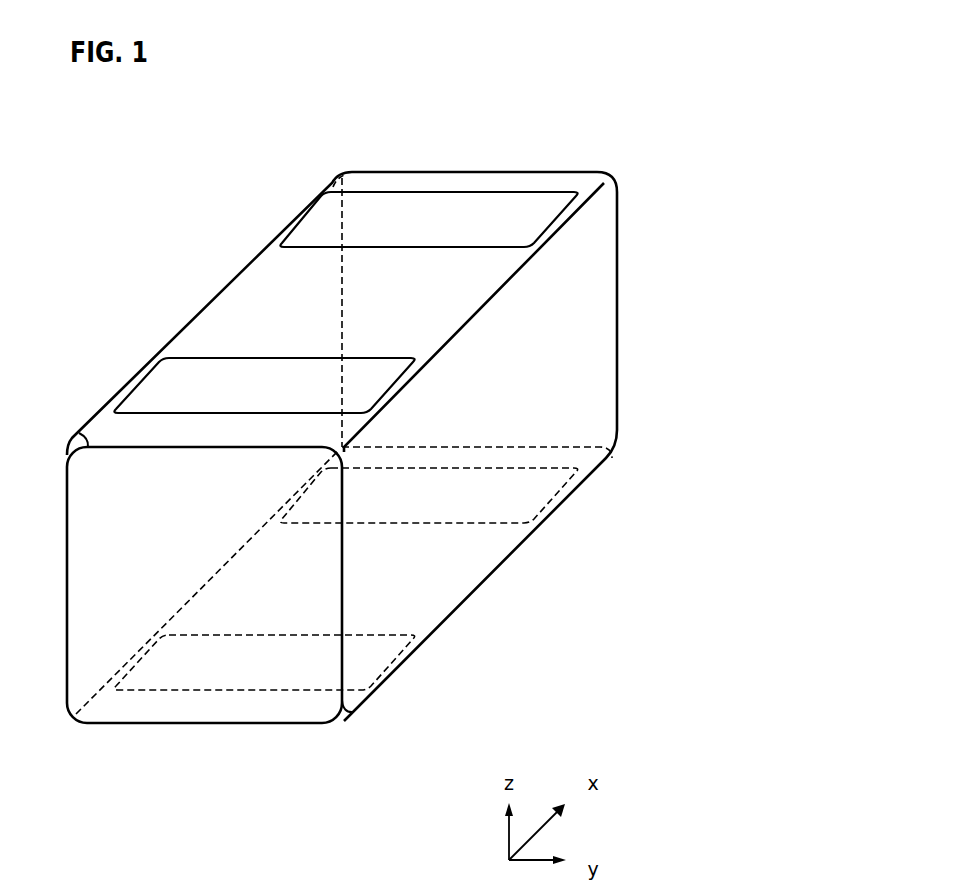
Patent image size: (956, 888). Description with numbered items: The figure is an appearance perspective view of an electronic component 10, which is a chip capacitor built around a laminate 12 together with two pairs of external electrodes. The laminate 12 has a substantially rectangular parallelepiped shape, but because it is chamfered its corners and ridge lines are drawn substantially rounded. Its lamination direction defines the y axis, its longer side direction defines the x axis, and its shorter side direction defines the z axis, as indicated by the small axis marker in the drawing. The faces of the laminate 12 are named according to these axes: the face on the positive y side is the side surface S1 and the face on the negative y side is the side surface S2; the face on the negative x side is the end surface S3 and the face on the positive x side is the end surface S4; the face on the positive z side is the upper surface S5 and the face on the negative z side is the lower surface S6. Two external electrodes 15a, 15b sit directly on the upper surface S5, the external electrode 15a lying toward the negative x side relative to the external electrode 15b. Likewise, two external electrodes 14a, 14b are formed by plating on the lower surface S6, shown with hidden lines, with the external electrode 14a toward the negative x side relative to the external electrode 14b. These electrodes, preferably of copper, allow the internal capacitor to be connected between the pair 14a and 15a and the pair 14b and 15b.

The electronic component 10 is at (178, 146).
The laminate 12 is at (505, 150).
The external electrode 14a is at (380, 662).
The external electrode 14b is at (540, 495).
The external electrode 15a is at (167, 397).
The external electrode 15b is at (332, 237).
The side surface S1 is at (473, 508).
The side surface S2 is at (192, 377).
The end surface S3 is at (210, 620).
The end surface S4 is at (530, 200).
The upper surface S5 is at (281, 320).
The lower surface S6 is at (425, 580).